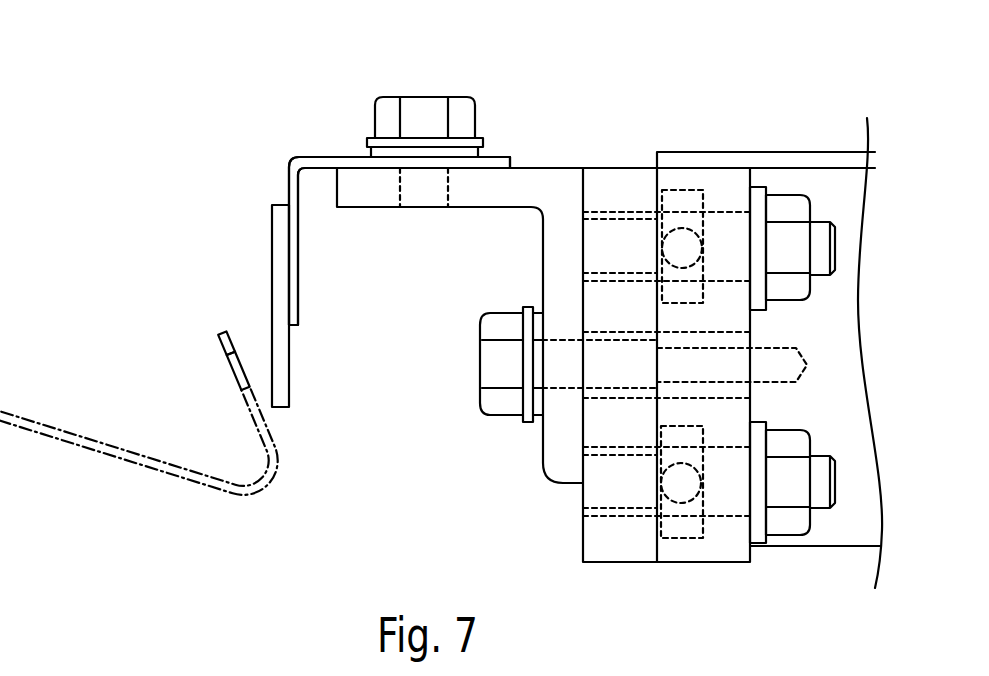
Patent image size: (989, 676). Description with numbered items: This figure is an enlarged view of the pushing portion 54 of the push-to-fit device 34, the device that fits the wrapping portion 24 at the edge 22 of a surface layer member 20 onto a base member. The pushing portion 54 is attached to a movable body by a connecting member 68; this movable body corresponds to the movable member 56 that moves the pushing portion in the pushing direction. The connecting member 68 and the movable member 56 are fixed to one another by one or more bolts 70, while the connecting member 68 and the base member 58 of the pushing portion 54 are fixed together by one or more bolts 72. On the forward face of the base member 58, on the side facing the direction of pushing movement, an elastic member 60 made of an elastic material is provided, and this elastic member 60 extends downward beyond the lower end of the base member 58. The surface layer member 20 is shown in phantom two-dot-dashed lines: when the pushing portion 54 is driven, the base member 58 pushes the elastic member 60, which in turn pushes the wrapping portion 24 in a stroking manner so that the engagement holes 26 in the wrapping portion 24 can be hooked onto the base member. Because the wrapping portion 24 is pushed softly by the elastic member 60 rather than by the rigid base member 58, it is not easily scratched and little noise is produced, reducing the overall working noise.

The surface layer member 20 is at (27, 432).
The edge 22 is at (182, 487).
The wrapping portion 24 is at (222, 345).
The engagement holes 26 is at (238, 372).
The push-to-fit device 34 is at (402, 455).
The pushing portion 54 is at (272, 133).
The movable member 56 is at (785, 160).
The base member 58 is at (299, 250).
The elastic member 60 is at (272, 270).
The connecting member 68 is at (480, 197).
The bolts 70 is at (495, 365).
The bolts 72 is at (427, 108).